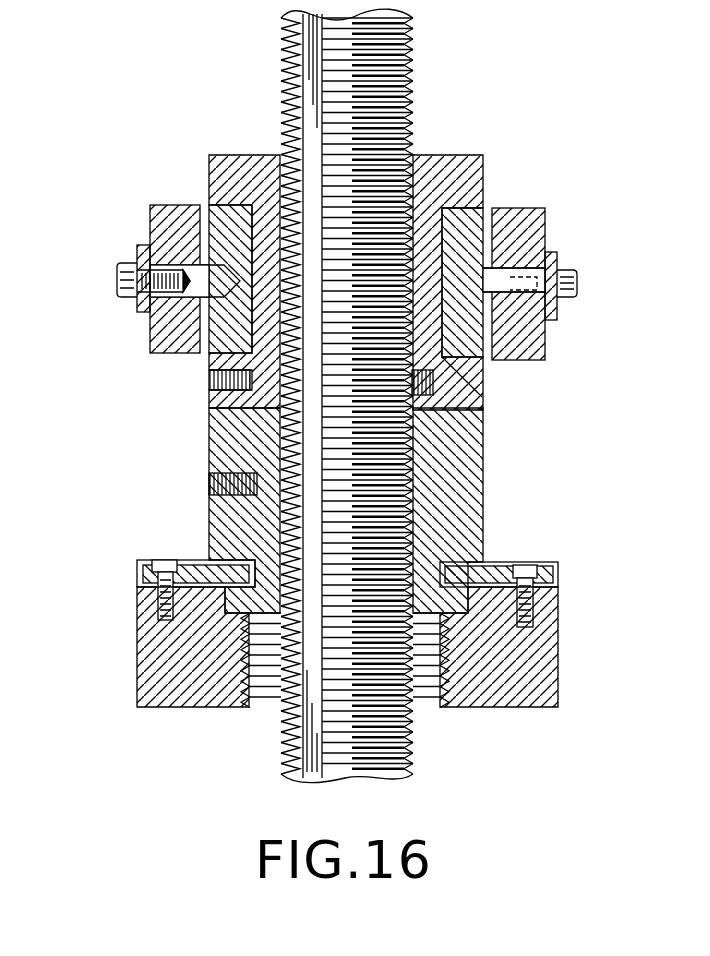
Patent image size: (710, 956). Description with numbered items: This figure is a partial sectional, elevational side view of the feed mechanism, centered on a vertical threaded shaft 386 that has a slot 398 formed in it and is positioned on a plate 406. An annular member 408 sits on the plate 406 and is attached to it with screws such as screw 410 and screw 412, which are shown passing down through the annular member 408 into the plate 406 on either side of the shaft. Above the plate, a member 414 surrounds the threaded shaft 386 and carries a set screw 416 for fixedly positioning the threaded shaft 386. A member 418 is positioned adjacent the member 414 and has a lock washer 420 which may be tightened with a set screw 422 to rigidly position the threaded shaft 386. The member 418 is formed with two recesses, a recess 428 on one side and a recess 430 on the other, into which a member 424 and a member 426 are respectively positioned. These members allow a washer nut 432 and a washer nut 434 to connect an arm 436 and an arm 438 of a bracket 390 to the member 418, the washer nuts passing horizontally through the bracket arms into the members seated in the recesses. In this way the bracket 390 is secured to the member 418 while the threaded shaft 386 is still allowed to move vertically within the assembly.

The threaded shaft 386 is at (416, 89).
The slot 398 is at (318, 130).
The recess 430 is at (247, 224).
The recess 428 is at (463, 258).
The member 426 is at (230, 248).
The arm 438 is at (162, 328).
The washer nut 434 is at (117, 284).
The member 424 is at (493, 257).
The bracket 390 is at (586, 271).
The arm 436 is at (523, 254).
The washer nut 432 is at (572, 286).
The set screw 422 is at (213, 387).
The lock washer 420 is at (435, 378).
The member 418 is at (455, 392).
The member 414 is at (455, 473).
The set screw 416 is at (212, 487).
The screw 412 is at (153, 606).
The annular member 408 is at (480, 573).
The screw 410 is at (533, 600).
The plate 406 is at (513, 653).